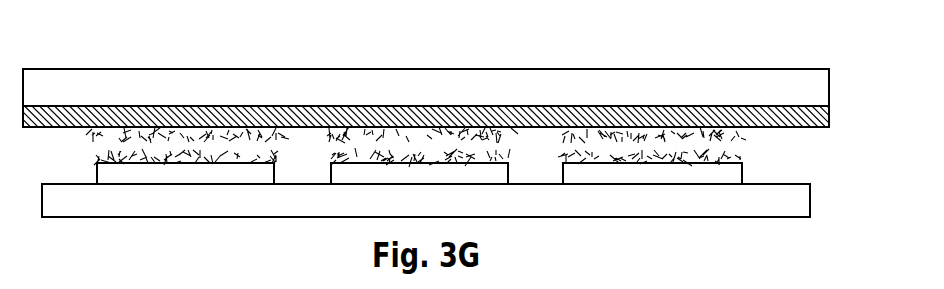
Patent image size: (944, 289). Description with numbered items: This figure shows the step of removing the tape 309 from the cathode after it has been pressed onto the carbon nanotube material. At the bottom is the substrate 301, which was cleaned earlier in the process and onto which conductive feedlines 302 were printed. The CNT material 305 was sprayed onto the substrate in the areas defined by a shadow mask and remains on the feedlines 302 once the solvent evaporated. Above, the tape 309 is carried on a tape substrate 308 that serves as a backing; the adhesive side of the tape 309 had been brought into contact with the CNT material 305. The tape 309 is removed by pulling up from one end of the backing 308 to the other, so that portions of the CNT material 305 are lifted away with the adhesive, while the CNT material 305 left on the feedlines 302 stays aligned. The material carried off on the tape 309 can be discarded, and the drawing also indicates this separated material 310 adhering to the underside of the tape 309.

The substrate 301 is at (810, 197).
The feedlines 302 is at (743, 180).
The CNT material 305 is at (756, 159).
The tape substrate 308 is at (501, 69).
The tape 309 is at (829, 109).
The carbon nanotubes on adhesive layer 310 is at (753, 135).